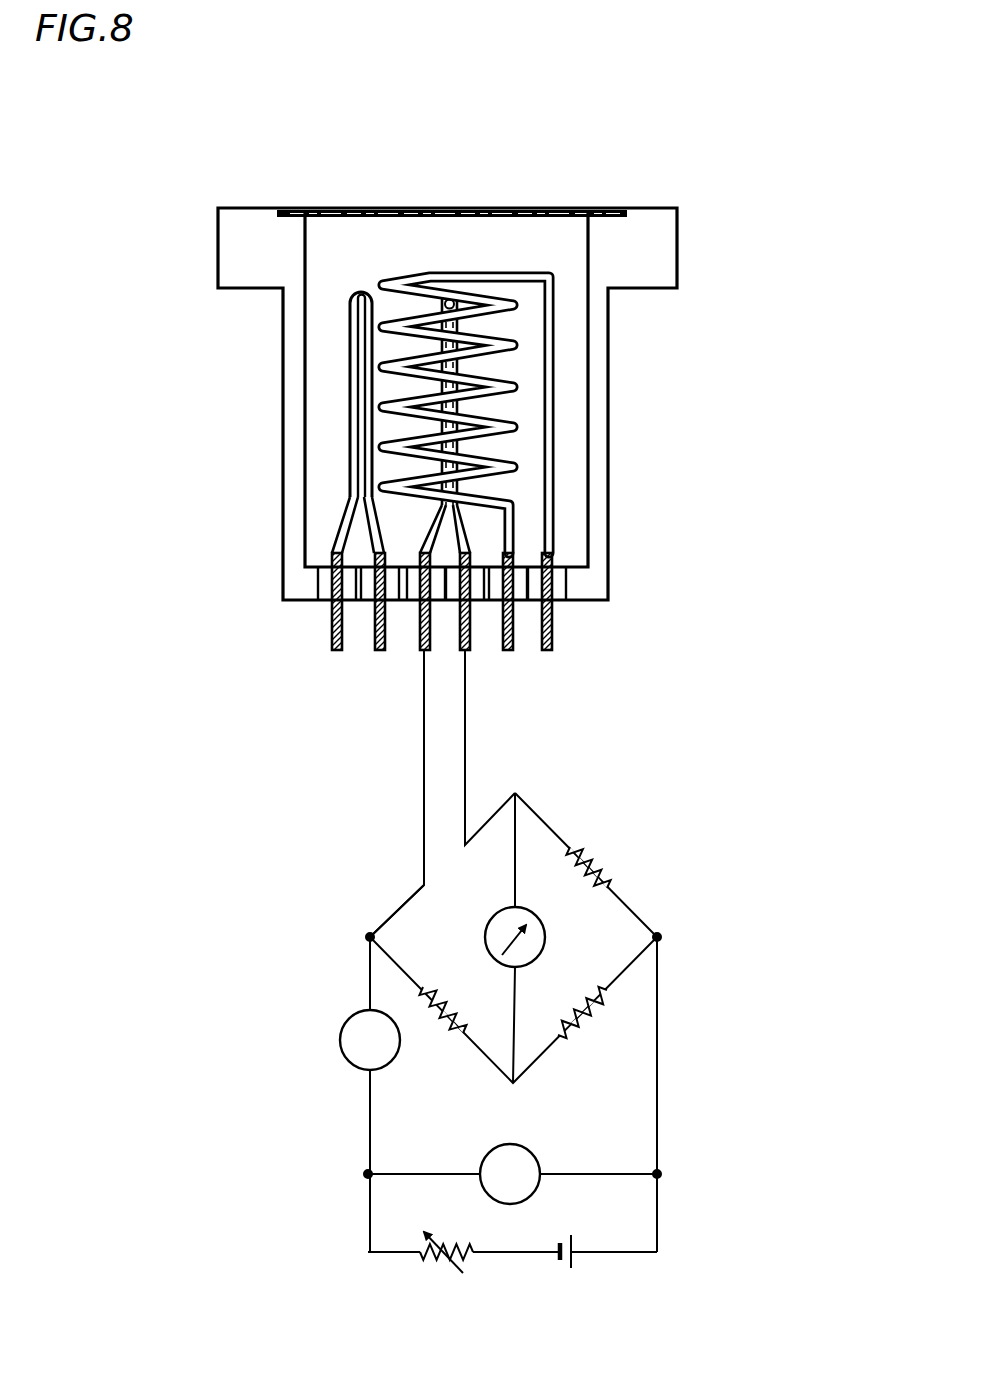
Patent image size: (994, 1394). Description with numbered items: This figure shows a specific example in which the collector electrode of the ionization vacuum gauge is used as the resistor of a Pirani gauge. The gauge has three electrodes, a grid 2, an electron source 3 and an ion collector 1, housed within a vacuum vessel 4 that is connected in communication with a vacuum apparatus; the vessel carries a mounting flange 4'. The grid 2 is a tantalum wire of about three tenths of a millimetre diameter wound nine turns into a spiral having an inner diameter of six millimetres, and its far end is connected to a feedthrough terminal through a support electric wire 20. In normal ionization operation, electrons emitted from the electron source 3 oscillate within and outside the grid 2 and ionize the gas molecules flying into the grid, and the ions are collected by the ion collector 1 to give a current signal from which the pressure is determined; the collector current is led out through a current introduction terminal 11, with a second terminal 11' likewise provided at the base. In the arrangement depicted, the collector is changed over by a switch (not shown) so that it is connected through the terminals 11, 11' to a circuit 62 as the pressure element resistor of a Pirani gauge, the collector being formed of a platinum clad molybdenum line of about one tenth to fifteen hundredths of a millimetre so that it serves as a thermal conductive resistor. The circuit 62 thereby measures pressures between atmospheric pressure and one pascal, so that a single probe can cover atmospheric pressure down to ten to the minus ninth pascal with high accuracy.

The ion collector 1 is at (482, 322).
The grid 2 is at (422, 283).
The electron source 3 is at (353, 377).
The vacuum vessel 4 is at (473, 404).
The mounting flange 4' is at (522, 213).
The support electric wire 20 is at (558, 410).
The current introduction terminal of the ion collector 11 is at (495, 699).
The terminal pin 11' is at (389, 745).
The circuit 62 is at (307, 800).